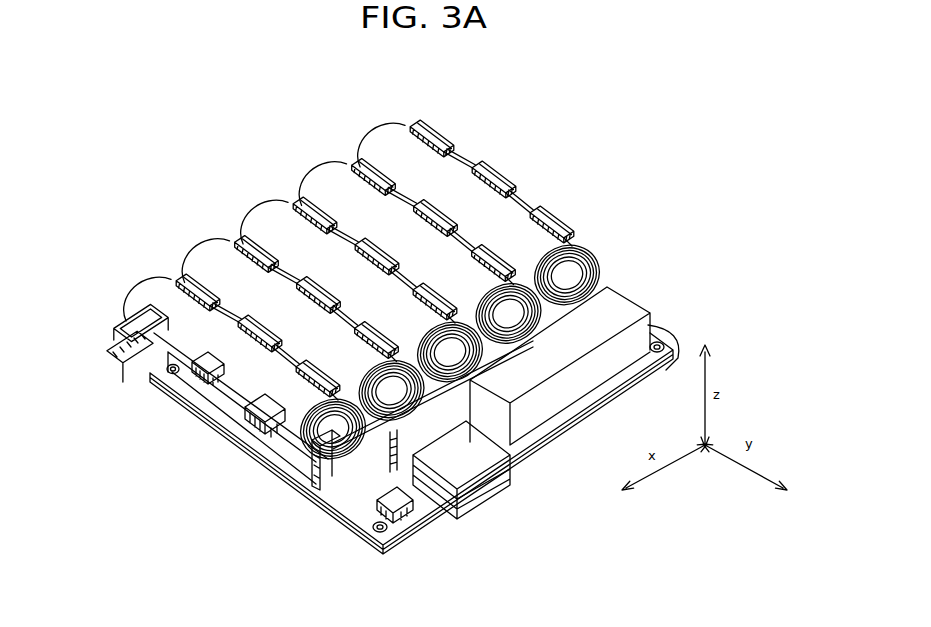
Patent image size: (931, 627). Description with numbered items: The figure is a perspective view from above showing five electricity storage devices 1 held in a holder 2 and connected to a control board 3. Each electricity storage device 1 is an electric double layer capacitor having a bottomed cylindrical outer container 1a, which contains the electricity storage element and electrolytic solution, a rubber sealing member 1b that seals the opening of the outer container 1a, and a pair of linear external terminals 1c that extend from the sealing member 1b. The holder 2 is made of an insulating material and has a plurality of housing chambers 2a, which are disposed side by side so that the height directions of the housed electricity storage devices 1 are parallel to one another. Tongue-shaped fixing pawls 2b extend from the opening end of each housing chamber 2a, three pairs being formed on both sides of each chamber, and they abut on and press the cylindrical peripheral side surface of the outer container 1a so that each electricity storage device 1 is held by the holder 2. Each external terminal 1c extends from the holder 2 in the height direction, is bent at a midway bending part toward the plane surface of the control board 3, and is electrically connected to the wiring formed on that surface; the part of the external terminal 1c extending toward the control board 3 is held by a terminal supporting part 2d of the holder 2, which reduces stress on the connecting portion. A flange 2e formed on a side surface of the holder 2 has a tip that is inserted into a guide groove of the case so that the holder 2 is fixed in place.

The electricity storage device 1 is at (369, 265).
The outer container 1a is at (443, 187).
The sealing member 1b is at (563, 280).
The external terminal 1c is at (597, 273).
The holder 2 is at (317, 427).
The housing chamber 2a is at (243, 397).
The tongue-shaped fixing pawl 2b is at (203, 375).
The terminal supporting part 2d is at (326, 472).
The flange 2e is at (137, 360).
The control board 3 is at (360, 527).